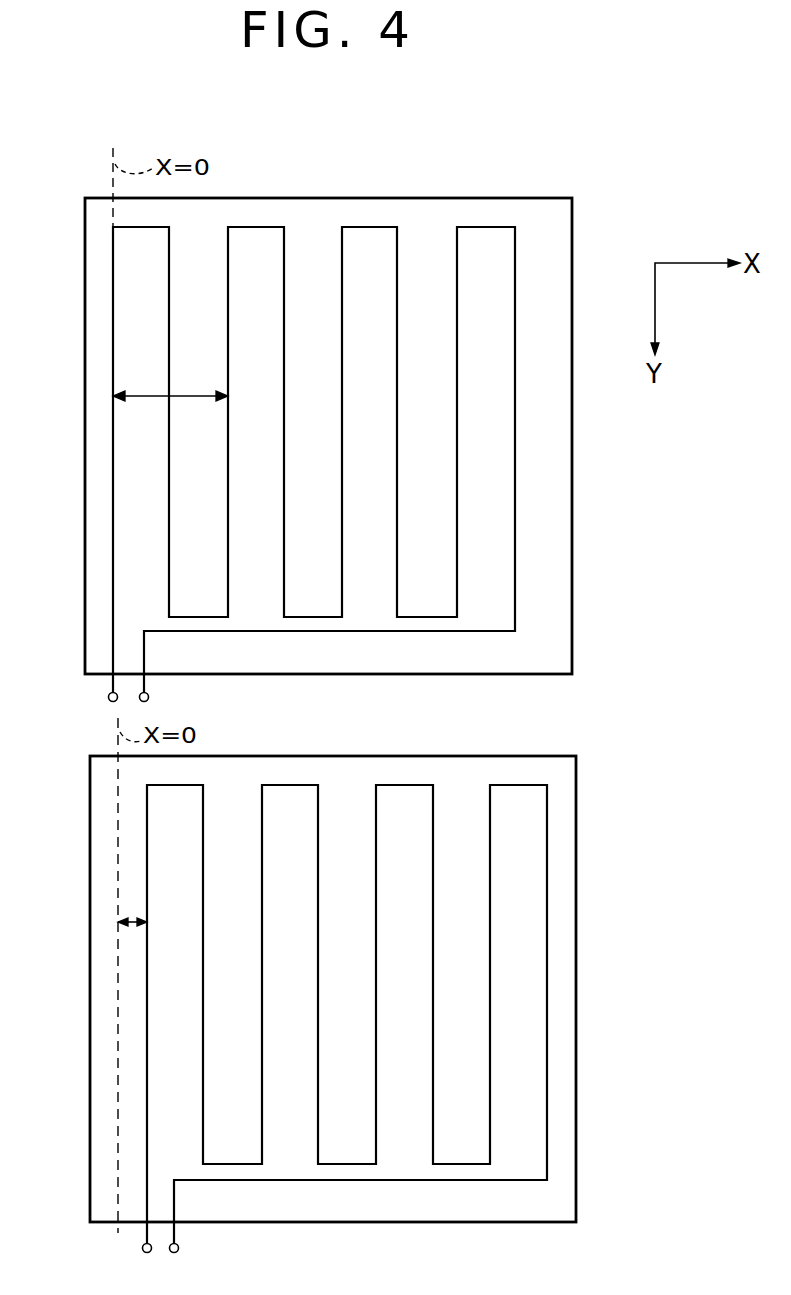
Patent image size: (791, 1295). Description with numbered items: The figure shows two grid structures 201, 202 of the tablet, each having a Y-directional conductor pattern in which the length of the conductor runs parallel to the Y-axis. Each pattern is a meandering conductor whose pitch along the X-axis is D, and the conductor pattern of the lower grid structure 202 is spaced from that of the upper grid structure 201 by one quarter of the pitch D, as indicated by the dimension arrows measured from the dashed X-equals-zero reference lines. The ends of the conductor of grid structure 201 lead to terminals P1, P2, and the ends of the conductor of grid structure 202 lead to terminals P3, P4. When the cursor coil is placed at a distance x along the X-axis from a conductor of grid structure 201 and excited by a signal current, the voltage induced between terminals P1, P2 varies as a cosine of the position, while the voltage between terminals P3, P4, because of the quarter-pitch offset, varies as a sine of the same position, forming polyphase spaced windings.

The grid structure 201 is at (546, 206).
The grid structure 202 is at (560, 767).
The terminal P1 is at (108, 697).
The terminal P2 is at (149, 697).
The terminal P3 is at (142, 1249).
The terminal P4 is at (179, 1250).
The pitch of the conductor pattern D is at (152, 398).